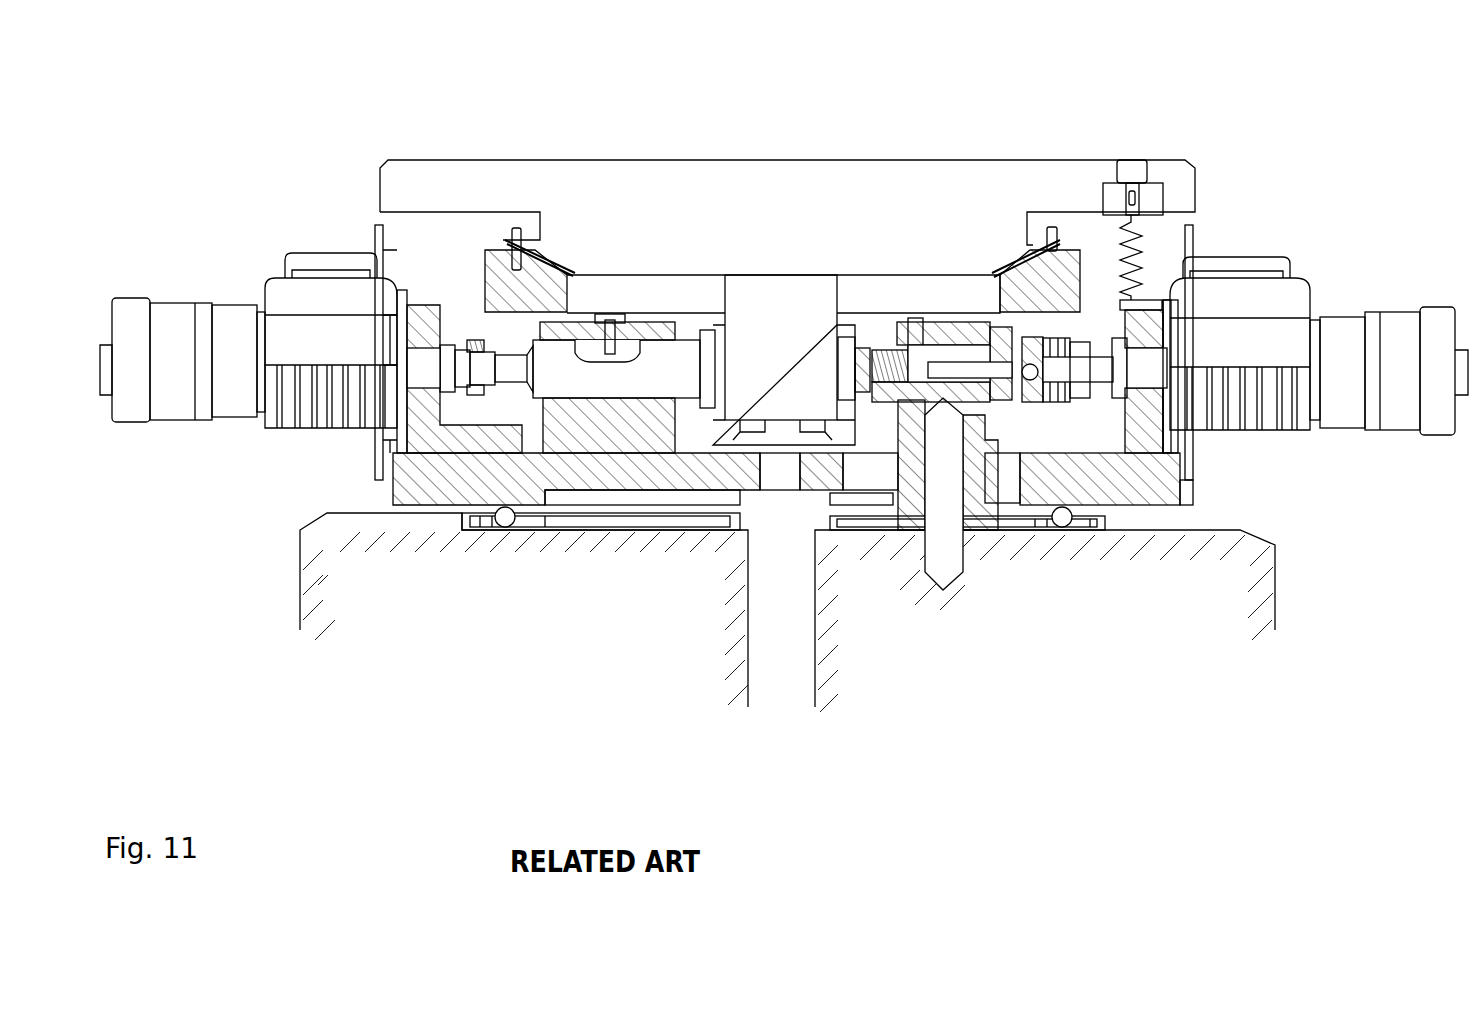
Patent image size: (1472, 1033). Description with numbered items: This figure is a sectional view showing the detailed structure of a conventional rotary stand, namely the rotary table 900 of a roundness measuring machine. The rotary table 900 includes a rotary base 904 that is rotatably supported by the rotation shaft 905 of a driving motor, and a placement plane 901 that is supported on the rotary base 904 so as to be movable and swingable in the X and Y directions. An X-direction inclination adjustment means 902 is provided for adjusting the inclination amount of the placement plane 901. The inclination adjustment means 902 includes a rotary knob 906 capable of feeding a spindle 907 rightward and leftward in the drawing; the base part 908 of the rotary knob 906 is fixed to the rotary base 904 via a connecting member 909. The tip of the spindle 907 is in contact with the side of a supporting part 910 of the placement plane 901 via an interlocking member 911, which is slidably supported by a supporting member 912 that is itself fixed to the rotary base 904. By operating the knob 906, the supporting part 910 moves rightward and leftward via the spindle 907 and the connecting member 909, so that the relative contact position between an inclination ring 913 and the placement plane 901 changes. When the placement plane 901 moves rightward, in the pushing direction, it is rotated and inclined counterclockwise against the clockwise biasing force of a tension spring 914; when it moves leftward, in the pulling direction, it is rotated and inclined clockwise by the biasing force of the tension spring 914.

The rotary table 900 is at (350, 138).
The placement plane 901 is at (905, 160).
The X-direction inclination adjustment means 902 is at (248, 372).
The rotary base 904 is at (467, 480).
The rotation shaft 905 is at (780, 630).
The rotary knob 906 is at (172, 405).
The spindle 907 is at (507, 362).
The base part 908 is at (303, 417).
The connecting member 909 is at (420, 440).
The supporting part 910 is at (803, 290).
The interlocking member 911 is at (677, 360).
The supporting member 912 is at (622, 430).
The inclination ring 913 is at (567, 262).
The tension spring 914 is at (1150, 238).